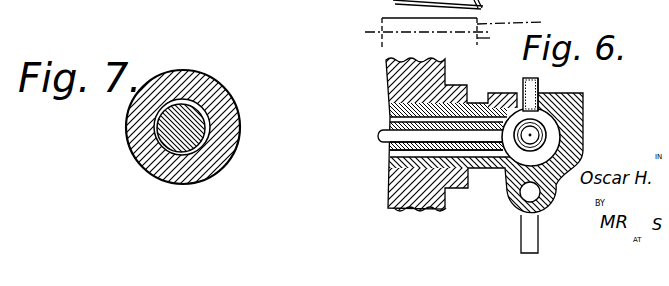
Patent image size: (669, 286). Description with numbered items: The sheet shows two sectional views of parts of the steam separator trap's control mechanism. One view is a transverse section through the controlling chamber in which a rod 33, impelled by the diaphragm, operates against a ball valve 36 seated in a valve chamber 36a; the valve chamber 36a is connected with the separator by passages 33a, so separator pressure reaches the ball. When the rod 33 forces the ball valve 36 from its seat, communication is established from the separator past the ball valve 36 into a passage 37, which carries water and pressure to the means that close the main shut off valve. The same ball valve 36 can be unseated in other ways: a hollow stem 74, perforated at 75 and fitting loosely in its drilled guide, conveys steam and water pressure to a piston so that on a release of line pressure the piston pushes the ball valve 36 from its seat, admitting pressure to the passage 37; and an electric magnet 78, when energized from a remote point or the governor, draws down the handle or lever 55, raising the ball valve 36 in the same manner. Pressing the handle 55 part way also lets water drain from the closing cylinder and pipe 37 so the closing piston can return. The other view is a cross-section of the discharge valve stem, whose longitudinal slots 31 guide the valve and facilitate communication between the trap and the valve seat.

In FIG. 7, the longitudinal slots 31 is at (203, 140).
In FIG. 6, the rod 33 is at (405, 135).
In FIG. 6, the passages 33a is at (412, 149).
In FIG. 6, the ball valve 36 is at (546, 132).
In FIG. 6, the valve chamber 36a is at (510, 107).
In FIG. 6, the passage 37 is at (527, 194).
In FIG. 6, the handle 55 is at (522, 235).
In FIG. 6, the stem 74 is at (543, 93).
In FIG. 6, the perforation 75 is at (531, 88).
In FIG. 6, the electric magnet 78 is at (382, 28).